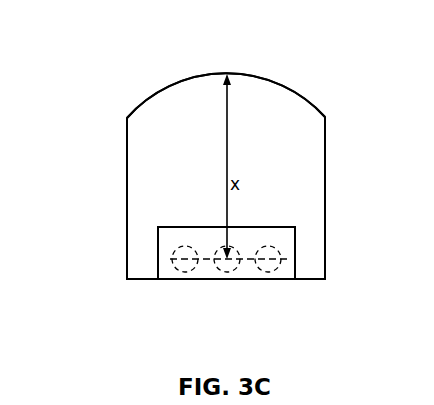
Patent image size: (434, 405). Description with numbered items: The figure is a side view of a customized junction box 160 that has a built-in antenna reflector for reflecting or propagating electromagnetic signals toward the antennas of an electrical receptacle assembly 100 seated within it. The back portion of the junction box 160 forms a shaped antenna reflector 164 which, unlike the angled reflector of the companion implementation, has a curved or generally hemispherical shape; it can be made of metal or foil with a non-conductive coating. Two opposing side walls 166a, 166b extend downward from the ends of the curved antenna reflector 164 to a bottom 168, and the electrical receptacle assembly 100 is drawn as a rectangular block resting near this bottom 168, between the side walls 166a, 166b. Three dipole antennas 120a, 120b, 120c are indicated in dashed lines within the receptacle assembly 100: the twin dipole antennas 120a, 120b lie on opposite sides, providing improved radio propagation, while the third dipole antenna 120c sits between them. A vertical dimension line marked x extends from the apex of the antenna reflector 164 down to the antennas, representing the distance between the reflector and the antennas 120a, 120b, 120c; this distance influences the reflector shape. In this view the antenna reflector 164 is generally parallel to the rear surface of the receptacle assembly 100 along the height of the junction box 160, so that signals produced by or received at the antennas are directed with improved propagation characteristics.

The junction box 160 is at (99, 44).
The shaped antenna reflector 164 is at (289, 88).
The left side wall 166a is at (127, 200).
The right side wall 166b is at (325, 198).
The bottom surface 168 is at (287, 291).
The electrical receptacle assembly 100 is at (205, 270).
The dipole antenna 120a is at (173, 253).
The dipole antenna 120b is at (281, 262).
The dipole antenna 120c is at (228, 271).